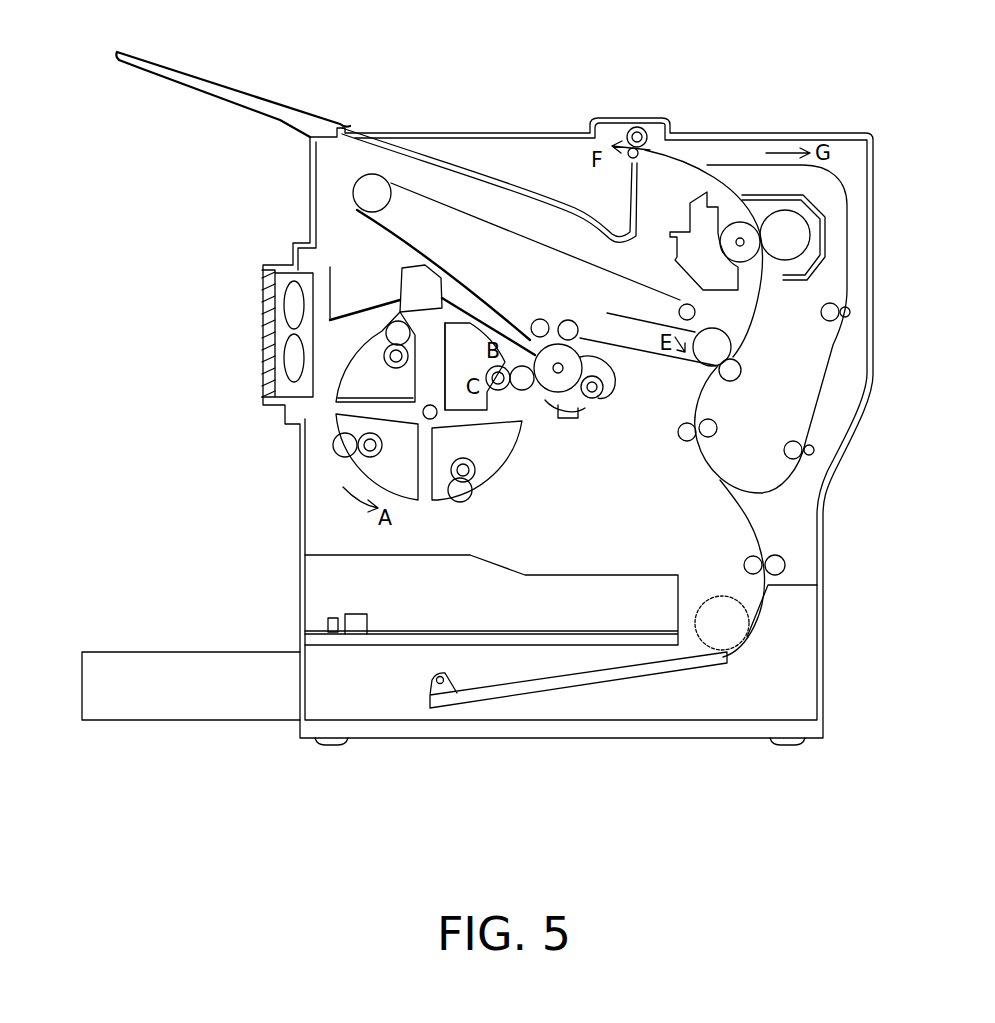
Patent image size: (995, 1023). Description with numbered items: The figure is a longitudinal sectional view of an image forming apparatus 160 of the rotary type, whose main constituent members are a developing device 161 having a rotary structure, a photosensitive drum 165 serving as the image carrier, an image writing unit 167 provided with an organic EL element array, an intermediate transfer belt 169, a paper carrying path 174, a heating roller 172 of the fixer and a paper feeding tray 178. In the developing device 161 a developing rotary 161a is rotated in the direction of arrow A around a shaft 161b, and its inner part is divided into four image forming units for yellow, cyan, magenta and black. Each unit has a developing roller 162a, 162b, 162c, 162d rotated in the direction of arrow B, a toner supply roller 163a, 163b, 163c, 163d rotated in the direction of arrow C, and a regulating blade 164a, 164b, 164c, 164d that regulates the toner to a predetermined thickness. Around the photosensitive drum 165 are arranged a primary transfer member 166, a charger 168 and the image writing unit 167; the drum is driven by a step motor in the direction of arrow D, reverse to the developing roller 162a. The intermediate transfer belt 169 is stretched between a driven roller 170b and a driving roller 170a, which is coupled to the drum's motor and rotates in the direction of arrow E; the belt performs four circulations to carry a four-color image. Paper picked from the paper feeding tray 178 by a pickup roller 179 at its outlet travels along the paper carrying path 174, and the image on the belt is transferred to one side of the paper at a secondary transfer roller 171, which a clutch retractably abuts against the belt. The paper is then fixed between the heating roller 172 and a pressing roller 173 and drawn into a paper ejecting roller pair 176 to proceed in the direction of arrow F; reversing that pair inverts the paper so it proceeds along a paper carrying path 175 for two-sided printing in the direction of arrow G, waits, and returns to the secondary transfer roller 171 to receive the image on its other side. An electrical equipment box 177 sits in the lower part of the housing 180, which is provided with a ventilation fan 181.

The image forming apparatus 160 is at (501, 96).
The developing device 161 is at (315, 505).
The developing rotary 161a is at (495, 487).
The shaft 161b is at (415, 395).
The developing roller 162a is at (530, 392).
The developing roller 162b is at (392, 322).
The developing roller 162c is at (333, 452).
The developing roller 162d is at (470, 500).
The toner supply roller 163a is at (488, 365).
The toner supply roller 163b is at (385, 347).
The toner supply roller 163c is at (374, 458).
The toner supply roller 163d is at (464, 457).
The regulating blade 164a is at (515, 440).
The regulating blade 164b is at (437, 300).
The regulating blade 164c is at (333, 425).
The regulating blade 164d is at (440, 508).
The photosensitive drum 165 is at (605, 368).
The primary transfer member 166 is at (569, 320).
The image writing unit 167 is at (580, 415).
The charger 168 is at (607, 394).
The intermediate transfer belt 169 is at (455, 204).
The driving roller 170a is at (697, 338).
The driven roller 170b is at (386, 209).
The secondary transfer roller 171 is at (744, 372).
The heating roller 172 is at (775, 270).
The pressing roller 173 is at (738, 264).
The paper carrying path 174 is at (706, 165).
The paper carrying path for two-sided printing 175 is at (867, 258).
The paper ejecting roller pair 176 is at (637, 126).
The electrical equipment box 177 is at (436, 603).
The paper feeding tray 178 is at (635, 678).
The pickup roller 179 is at (722, 596).
The housing 180 is at (308, 212).
The ventilation fan 181 is at (265, 320).